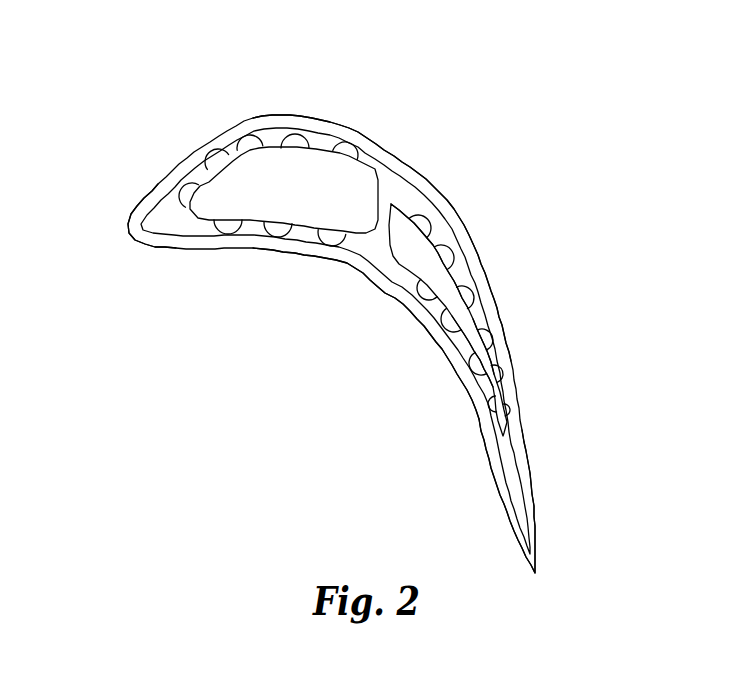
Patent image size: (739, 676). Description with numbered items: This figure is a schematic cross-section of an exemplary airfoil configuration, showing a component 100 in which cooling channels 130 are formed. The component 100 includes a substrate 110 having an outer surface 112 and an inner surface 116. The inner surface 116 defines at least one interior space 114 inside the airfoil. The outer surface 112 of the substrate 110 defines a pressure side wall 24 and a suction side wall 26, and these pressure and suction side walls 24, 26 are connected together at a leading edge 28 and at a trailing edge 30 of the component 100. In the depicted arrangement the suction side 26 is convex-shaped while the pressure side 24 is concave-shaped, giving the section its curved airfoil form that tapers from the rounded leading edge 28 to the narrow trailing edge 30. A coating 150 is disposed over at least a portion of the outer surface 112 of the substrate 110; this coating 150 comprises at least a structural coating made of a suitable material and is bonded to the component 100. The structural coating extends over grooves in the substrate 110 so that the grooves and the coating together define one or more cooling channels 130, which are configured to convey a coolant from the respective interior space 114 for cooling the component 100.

The component 100 is at (551, 108).
The pressure side wall 24 is at (432, 188).
The suction side wall 26 is at (380, 293).
The leading edge 28 is at (128, 232).
The trailing edge 30 is at (535, 573).
The substrate 110 is at (415, 166).
The outer surface 112 is at (490, 383).
The interior space 114 is at (310, 168).
The inner surface 116 is at (433, 243).
The cooling channels 130 is at (249, 140).
The coating 150 is at (474, 253).